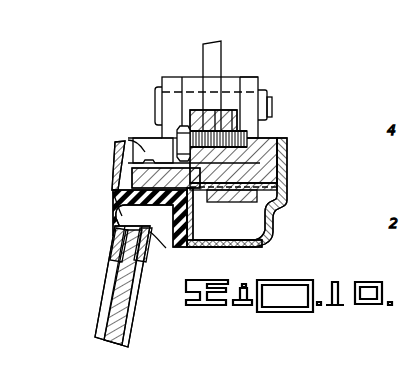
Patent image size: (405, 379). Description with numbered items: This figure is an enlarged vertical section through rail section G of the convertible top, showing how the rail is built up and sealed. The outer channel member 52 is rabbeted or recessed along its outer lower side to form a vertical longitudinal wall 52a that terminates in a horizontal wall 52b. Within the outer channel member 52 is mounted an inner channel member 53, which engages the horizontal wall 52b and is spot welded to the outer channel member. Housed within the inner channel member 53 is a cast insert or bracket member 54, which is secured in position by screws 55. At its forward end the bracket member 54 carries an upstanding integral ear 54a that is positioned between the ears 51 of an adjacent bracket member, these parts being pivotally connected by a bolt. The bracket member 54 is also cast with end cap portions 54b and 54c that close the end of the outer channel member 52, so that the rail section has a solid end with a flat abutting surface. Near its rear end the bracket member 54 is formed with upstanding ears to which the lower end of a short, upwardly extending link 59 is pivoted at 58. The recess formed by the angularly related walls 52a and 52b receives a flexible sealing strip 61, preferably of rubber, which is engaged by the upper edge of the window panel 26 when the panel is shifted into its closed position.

The link 59 is at (212, 48).
The upstanding integral ear 54a is at (230, 78).
The ears 51 is at (258, 90).
The pivot 58 is at (238, 114).
The end cap portion 54c is at (286, 160).
The inner channel member 53 is at (117, 192).
The screws 55 is at (122, 172).
The end cap portion 54b is at (128, 140).
The cast insert or bracket member 54 is at (150, 218).
The vertical longitudinal wall 52a is at (192, 216).
The outer channel member 52 is at (272, 242).
The horizontal wall 52b is at (110, 196).
The flexible sealing strip 61 is at (157, 246).
The window panel 26 is at (112, 297).